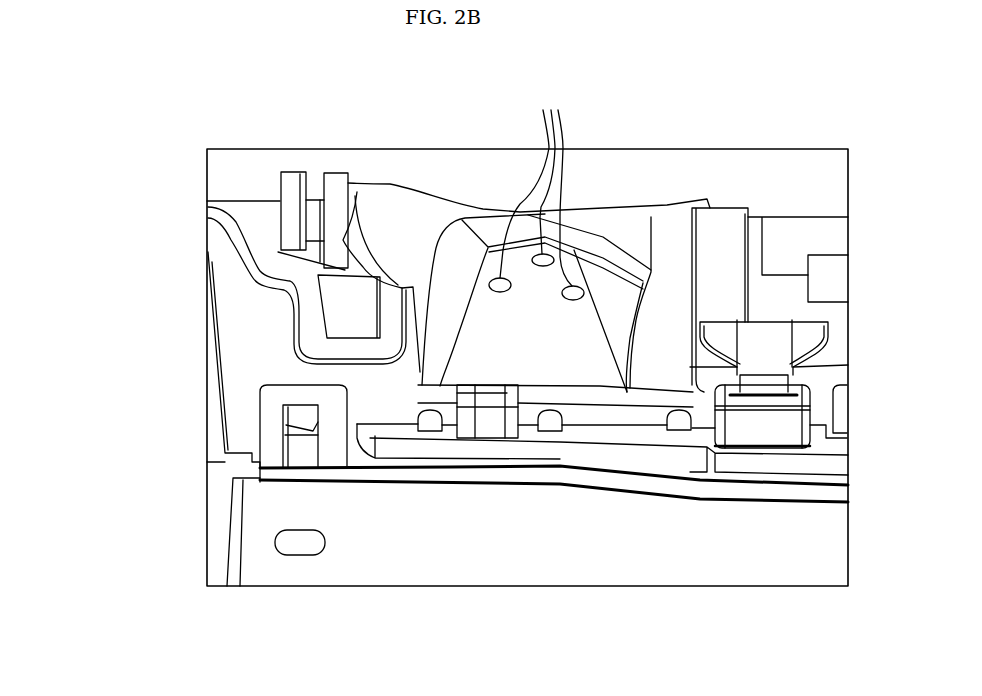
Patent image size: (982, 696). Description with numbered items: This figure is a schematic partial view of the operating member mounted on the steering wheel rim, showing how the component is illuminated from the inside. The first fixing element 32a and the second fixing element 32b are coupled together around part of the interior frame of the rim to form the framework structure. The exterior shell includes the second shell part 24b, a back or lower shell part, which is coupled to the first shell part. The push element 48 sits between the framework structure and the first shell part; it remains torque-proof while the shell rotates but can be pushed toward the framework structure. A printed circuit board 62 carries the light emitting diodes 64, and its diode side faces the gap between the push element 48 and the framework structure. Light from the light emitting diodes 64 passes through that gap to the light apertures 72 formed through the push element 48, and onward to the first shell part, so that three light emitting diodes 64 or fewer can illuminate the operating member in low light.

The second shell part 24b is at (803, 557).
The first fixing element 32a is at (237, 340).
The second fixing element 32b is at (217, 522).
The push element 48 is at (678, 232).
The printed circuit board 62 is at (664, 452).
The light emitting diode 64 is at (550, 431).
The light aperture 72 is at (536, 186).